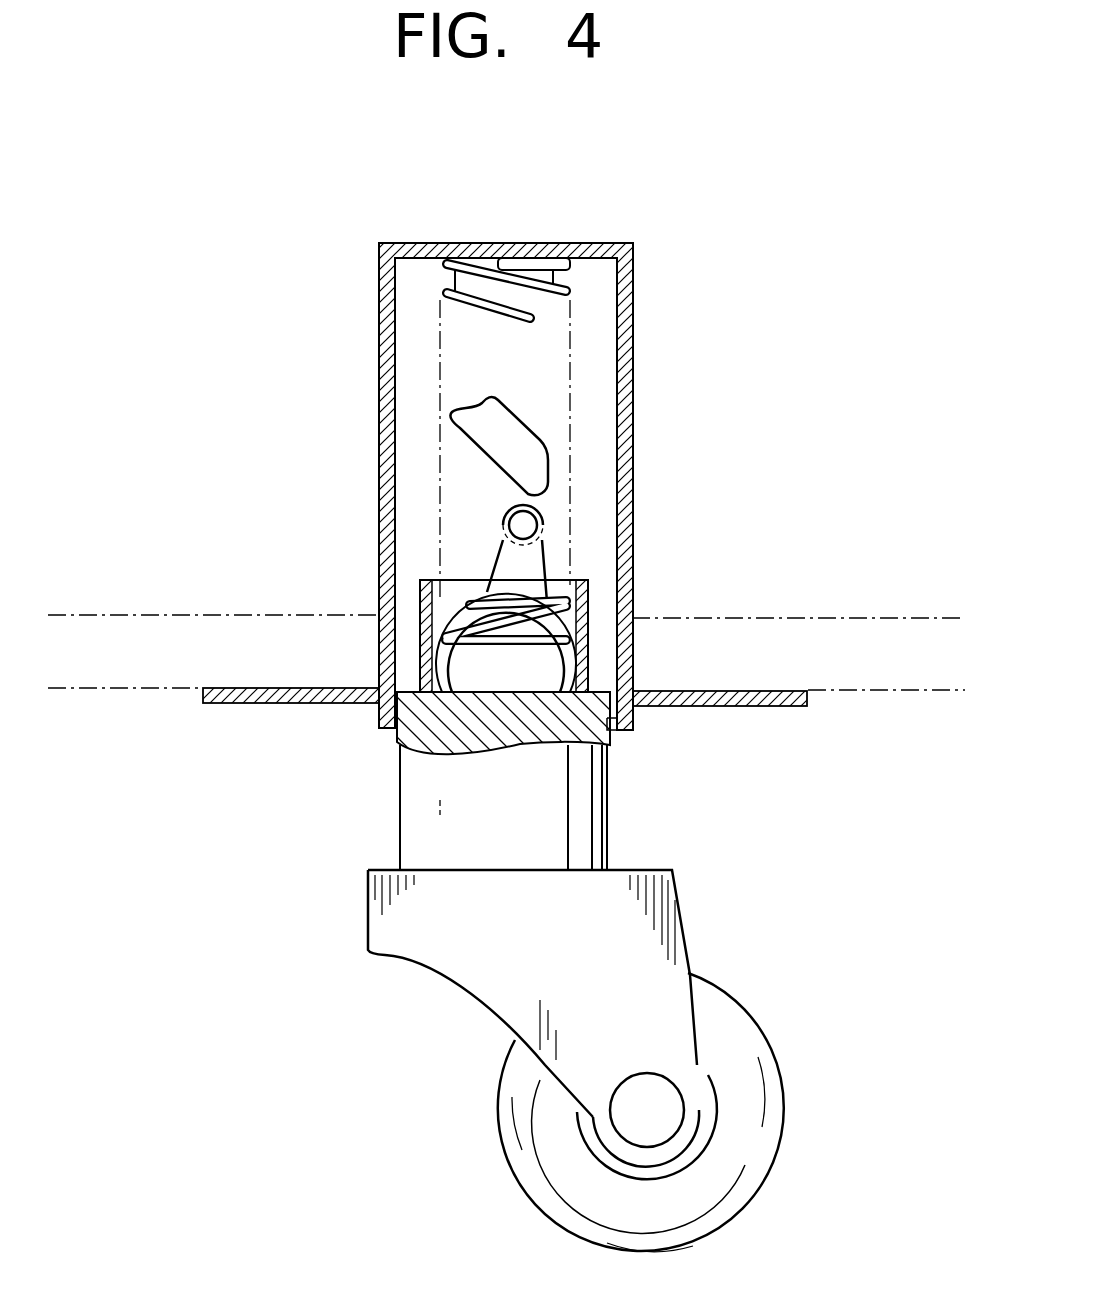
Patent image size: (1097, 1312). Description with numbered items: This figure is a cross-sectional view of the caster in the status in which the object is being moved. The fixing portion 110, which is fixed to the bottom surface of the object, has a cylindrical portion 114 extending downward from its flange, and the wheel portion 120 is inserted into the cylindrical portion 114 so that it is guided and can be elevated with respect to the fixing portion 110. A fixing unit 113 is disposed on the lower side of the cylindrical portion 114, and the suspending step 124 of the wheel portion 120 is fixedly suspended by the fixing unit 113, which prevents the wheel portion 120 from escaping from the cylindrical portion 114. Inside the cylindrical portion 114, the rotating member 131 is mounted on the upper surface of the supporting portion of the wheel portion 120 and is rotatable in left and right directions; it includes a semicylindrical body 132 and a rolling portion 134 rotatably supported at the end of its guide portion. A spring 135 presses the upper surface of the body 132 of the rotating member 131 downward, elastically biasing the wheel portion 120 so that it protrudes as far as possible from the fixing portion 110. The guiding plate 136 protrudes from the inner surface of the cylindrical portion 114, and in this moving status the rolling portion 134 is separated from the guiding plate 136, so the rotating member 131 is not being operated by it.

The fixing portion 110 is at (668, 395).
The fixing unit 113 is at (625, 727).
The cylindrical portion 114 is at (632, 323).
The wheel portion 120 is at (772, 877).
The suspending step 124 is at (618, 715).
The rotating member 131 is at (552, 567).
The body 132 is at (487, 672).
The rolling portion 134 is at (545, 526).
The spring 135 is at (530, 285).
The guiding plate 136 is at (528, 453).